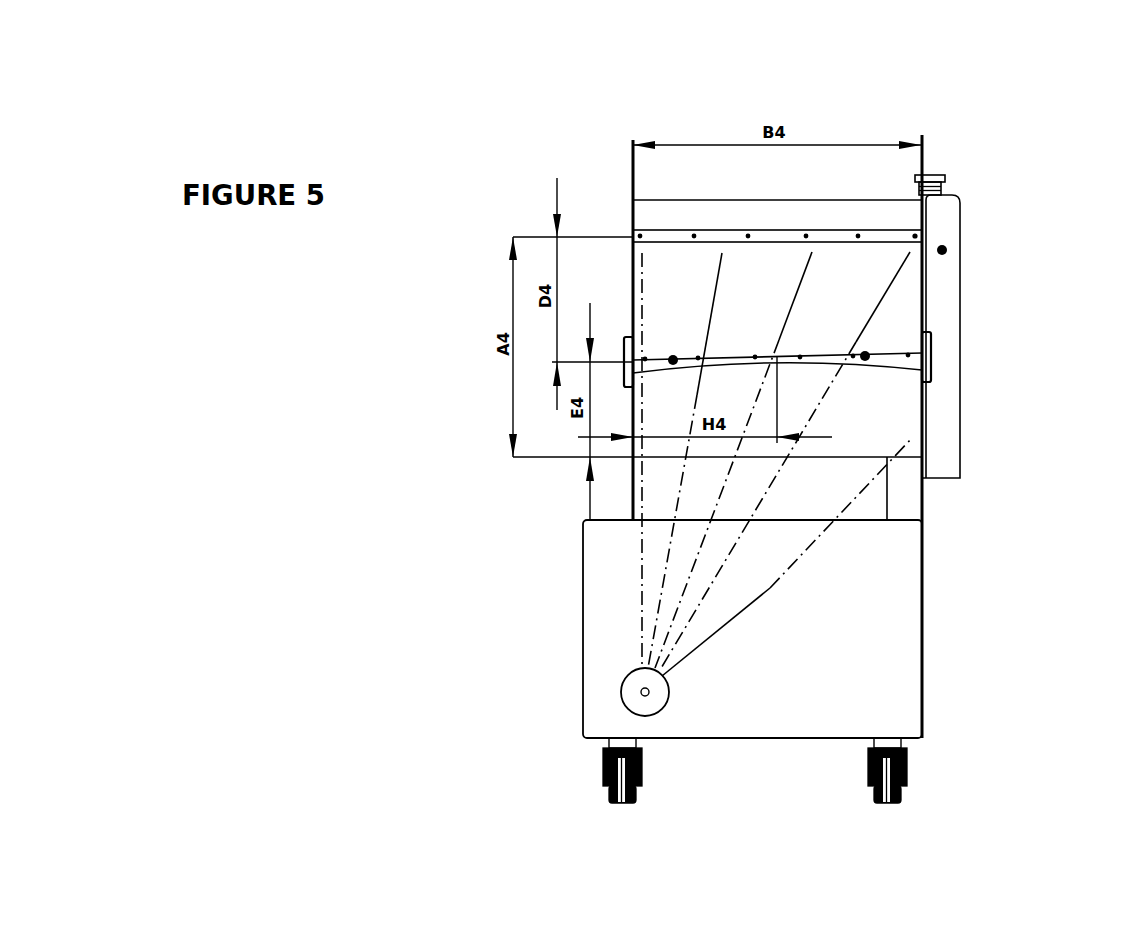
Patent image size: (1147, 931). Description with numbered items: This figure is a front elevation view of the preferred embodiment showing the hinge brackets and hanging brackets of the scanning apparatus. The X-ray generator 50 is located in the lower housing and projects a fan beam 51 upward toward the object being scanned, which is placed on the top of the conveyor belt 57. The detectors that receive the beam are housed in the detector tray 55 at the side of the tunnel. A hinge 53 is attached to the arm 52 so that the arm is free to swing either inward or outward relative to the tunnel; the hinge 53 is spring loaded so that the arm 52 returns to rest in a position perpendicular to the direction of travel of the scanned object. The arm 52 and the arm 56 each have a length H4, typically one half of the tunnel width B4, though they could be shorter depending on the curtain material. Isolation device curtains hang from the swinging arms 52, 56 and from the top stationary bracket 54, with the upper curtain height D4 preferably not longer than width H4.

The X-ray generator 50 is at (636, 688).
The fan beam 51 is at (770, 583).
The arm 52 is at (865, 356).
The hinge 53 is at (932, 350).
The top stationary bracket 54 is at (923, 226).
The detector tray 55 is at (942, 250).
The arm 56 is at (610, 219).
The conveyor belt 57 is at (857, 455).